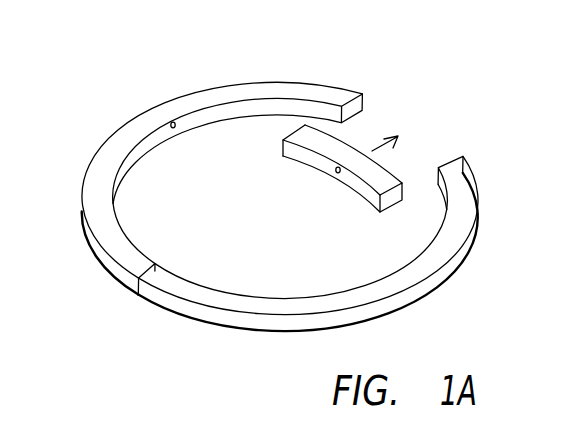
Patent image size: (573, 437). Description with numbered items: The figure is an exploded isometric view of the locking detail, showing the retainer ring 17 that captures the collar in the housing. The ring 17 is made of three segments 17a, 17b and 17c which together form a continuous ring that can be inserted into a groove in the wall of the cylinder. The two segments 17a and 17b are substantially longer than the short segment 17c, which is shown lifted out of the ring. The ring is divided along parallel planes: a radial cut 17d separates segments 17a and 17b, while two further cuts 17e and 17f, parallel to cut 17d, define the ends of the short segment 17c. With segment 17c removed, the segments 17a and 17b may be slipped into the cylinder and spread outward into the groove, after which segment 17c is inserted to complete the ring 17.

The retainer ring 17 is at (285, 177).
The first ring segment 17a is at (104, 181).
The second ring segment 17b is at (309, 304).
The third ring segment 17c is at (373, 185).
The radial cut 17d is at (154, 265).
The first parallel cut 17e is at (464, 158).
The second parallel cut 17f is at (353, 91).